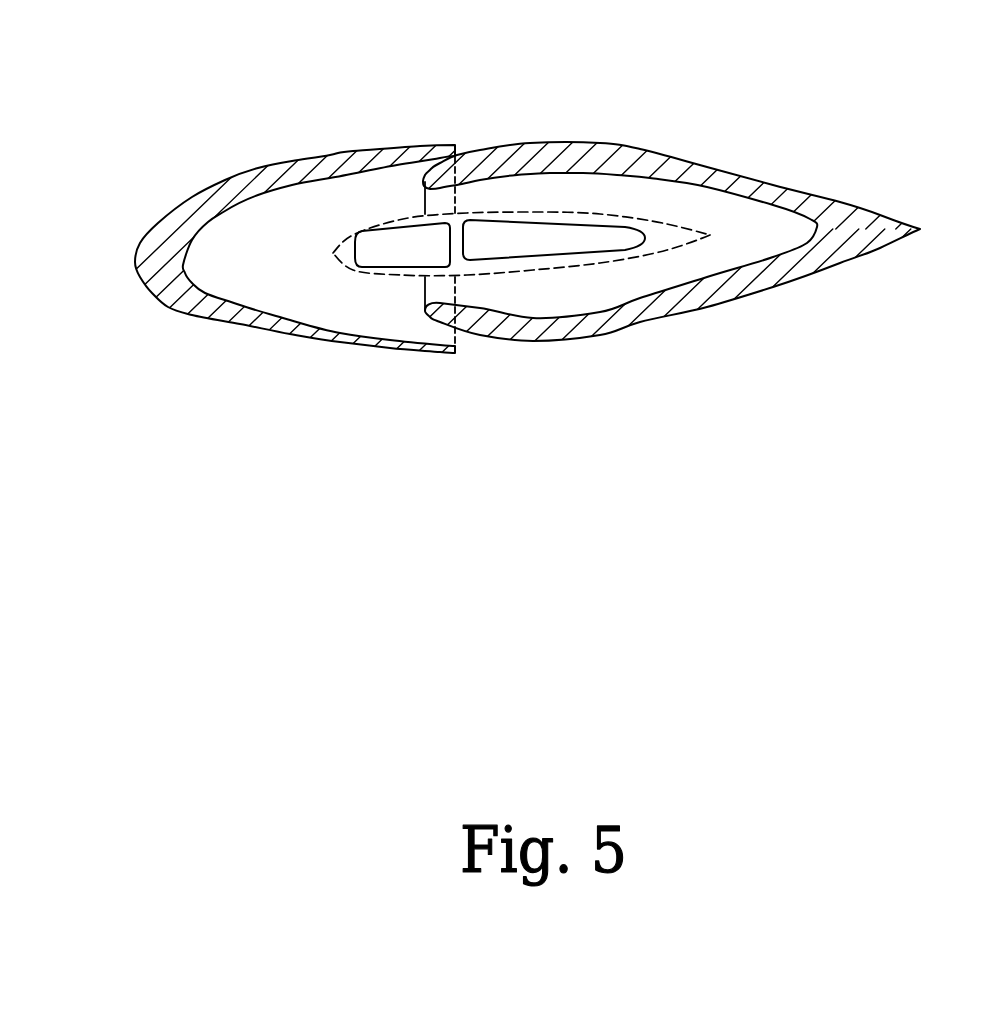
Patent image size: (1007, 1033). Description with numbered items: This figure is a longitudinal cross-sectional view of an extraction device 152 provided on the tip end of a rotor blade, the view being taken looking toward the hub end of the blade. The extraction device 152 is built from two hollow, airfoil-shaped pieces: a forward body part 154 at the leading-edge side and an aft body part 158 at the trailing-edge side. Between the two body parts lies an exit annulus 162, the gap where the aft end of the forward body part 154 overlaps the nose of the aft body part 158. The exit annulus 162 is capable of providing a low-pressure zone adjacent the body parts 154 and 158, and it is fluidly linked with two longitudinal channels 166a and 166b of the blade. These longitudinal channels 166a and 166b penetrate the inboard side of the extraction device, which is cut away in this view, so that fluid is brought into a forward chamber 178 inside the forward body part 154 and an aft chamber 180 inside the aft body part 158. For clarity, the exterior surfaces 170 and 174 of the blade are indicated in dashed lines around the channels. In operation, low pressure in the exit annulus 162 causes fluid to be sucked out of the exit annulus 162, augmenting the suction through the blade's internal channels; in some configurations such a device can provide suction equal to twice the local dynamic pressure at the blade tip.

The extraction device 152 is at (672, 464).
The forward body part 154 is at (290, 162).
The aft body part 158 is at (814, 201).
The exit annulus 162 is at (456, 158).
The longitudinal channel 166a is at (400, 247).
The longitudinal channel 166b is at (553, 245).
The exterior surface of the blade 170 is at (607, 213).
The exterior surface of the blade 174 is at (661, 254).
The forward chamber 178 is at (292, 273).
The aft chamber 180 is at (777, 253).